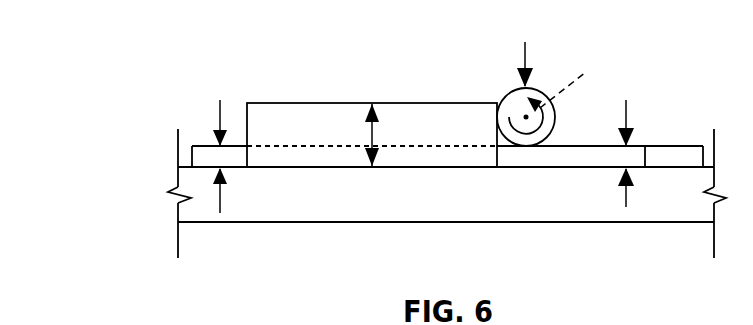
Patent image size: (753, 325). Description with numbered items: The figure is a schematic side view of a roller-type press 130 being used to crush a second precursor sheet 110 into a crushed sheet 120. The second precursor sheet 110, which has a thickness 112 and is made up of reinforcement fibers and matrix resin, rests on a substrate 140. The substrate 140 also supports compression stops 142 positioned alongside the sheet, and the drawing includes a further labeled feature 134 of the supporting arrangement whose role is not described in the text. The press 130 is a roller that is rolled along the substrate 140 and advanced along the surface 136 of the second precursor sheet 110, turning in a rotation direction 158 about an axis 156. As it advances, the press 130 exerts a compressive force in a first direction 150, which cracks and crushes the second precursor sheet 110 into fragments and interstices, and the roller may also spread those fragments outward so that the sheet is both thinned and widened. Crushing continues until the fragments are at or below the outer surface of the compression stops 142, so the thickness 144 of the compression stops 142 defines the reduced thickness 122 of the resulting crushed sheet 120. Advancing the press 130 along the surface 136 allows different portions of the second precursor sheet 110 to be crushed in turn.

The second precursor sheet 110 is at (457, 120).
The thickness 112 is at (371, 102).
The crushed sheet 120 is at (637, 157).
The thickness 122 is at (623, 193).
The press 130 is at (566, 86).
The top surface of substrate 134 is at (477, 170).
The surface 136 is at (383, 103).
The substrate 140 is at (447, 206).
The compression stops 142 is at (200, 155).
The thickness 144 is at (221, 197).
The first direction 150 is at (528, 53).
The axis 156 is at (549, 101).
The rotation direction 158 is at (545, 128).